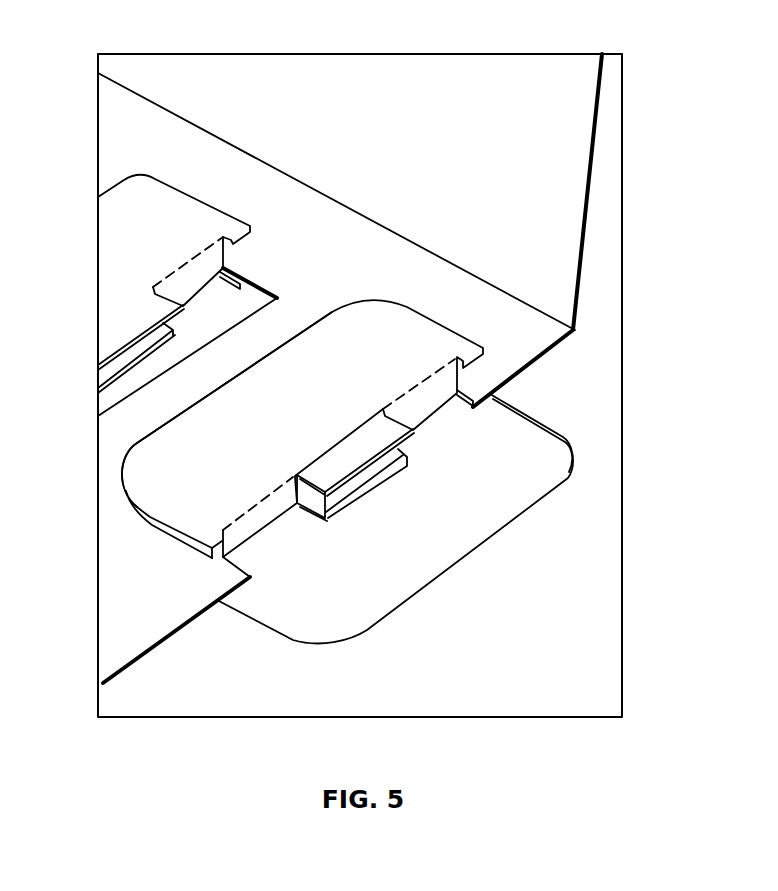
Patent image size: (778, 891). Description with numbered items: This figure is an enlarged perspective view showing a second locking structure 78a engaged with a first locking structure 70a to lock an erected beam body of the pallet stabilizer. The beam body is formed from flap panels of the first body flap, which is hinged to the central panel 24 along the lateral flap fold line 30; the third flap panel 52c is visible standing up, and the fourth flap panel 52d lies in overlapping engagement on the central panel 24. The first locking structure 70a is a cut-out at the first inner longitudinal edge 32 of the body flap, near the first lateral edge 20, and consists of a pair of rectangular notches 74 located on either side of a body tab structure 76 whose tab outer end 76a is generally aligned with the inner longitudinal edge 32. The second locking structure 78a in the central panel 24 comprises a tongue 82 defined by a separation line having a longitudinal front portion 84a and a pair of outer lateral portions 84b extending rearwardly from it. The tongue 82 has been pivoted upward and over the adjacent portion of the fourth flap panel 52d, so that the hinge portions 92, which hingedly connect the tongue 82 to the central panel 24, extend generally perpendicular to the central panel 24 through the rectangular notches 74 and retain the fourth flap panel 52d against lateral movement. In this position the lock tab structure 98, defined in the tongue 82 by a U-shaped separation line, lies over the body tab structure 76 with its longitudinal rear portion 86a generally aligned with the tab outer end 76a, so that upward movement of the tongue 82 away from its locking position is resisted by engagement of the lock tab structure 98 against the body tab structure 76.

The tongue 82 is at (340, 350).
The third flap panel 52c is at (323, 93).
The lateral flap fold line 30 is at (408, 242).
The fourth flap panel 52d is at (140, 138).
The longitudinal front portion 84a is at (237, 378).
The outer lateral portions 84b is at (158, 527).
The second locking structure 78a is at (120, 468).
The first lateral edge 20 is at (103, 683).
The first inner longitudinal edge 32 is at (170, 636).
The first locking structure 70a is at (256, 588).
The rectangular notches 74 is at (236, 572).
The hinge portions 92 is at (266, 520).
The body tab structure 76 is at (310, 500).
The lock tab structure 98 is at (328, 466).
The longitudinal rear portion 86a is at (405, 457).
The tab outer end 76a is at (380, 483).
The central panel 24 is at (501, 662).